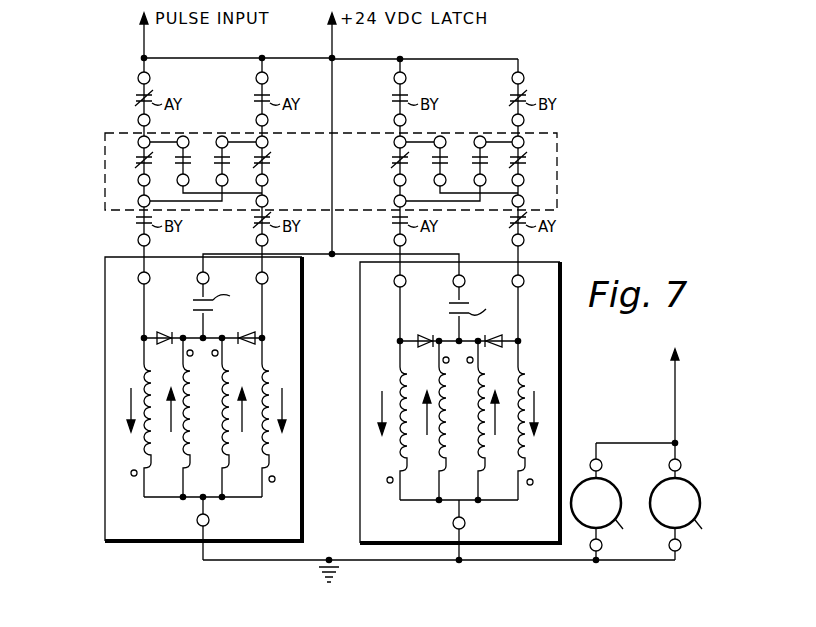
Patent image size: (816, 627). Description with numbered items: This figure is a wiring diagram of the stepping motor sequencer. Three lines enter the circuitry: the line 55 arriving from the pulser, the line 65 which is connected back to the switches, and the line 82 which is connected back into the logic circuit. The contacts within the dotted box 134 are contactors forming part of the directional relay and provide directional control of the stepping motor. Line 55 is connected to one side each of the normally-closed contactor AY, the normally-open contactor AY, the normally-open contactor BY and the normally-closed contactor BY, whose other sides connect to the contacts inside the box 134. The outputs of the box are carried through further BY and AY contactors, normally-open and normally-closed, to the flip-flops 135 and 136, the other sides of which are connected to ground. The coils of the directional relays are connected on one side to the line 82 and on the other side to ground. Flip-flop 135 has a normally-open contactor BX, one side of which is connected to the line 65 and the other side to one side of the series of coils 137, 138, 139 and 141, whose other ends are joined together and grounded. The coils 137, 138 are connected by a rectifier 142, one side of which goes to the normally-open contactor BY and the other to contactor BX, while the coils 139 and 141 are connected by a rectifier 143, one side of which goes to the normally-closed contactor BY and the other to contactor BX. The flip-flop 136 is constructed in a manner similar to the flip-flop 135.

The line 55 is at (146, 43).
The line 65 is at (332, 46).
The dotted box 134 is at (105, 176).
The flip-flop 135 is at (192, 407).
The flip-flop 136 is at (560, 357).
The coil 137 is at (143, 347).
The coil 138 is at (182, 347).
The coil 139 is at (223, 347).
The coil 141 is at (263, 347).
The rectifier 142 is at (168, 331).
The rectifier 143 is at (241, 331).
The line 82 is at (676, 403).